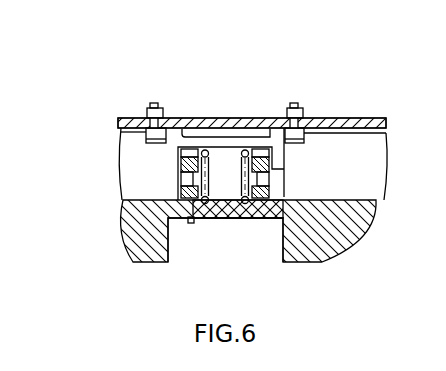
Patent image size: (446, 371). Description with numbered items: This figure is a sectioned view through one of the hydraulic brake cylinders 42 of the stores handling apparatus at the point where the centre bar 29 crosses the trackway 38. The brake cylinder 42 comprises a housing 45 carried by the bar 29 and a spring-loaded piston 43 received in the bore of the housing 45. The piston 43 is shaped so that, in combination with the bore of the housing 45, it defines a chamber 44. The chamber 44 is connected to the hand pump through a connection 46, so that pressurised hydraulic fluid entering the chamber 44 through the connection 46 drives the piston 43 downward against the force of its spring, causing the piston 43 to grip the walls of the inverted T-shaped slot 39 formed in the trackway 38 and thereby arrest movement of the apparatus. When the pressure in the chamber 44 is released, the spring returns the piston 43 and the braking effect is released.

The centre bar 29 is at (252, 118).
The housing 45 is at (173, 140).
The brake cylinder 42 is at (302, 156).
The chamber 44 is at (182, 178).
The connection 46 is at (275, 176).
The trackway 38 is at (320, 247).
The slot 39 is at (283, 240).
The spring-loaded piston 43 is at (196, 222).